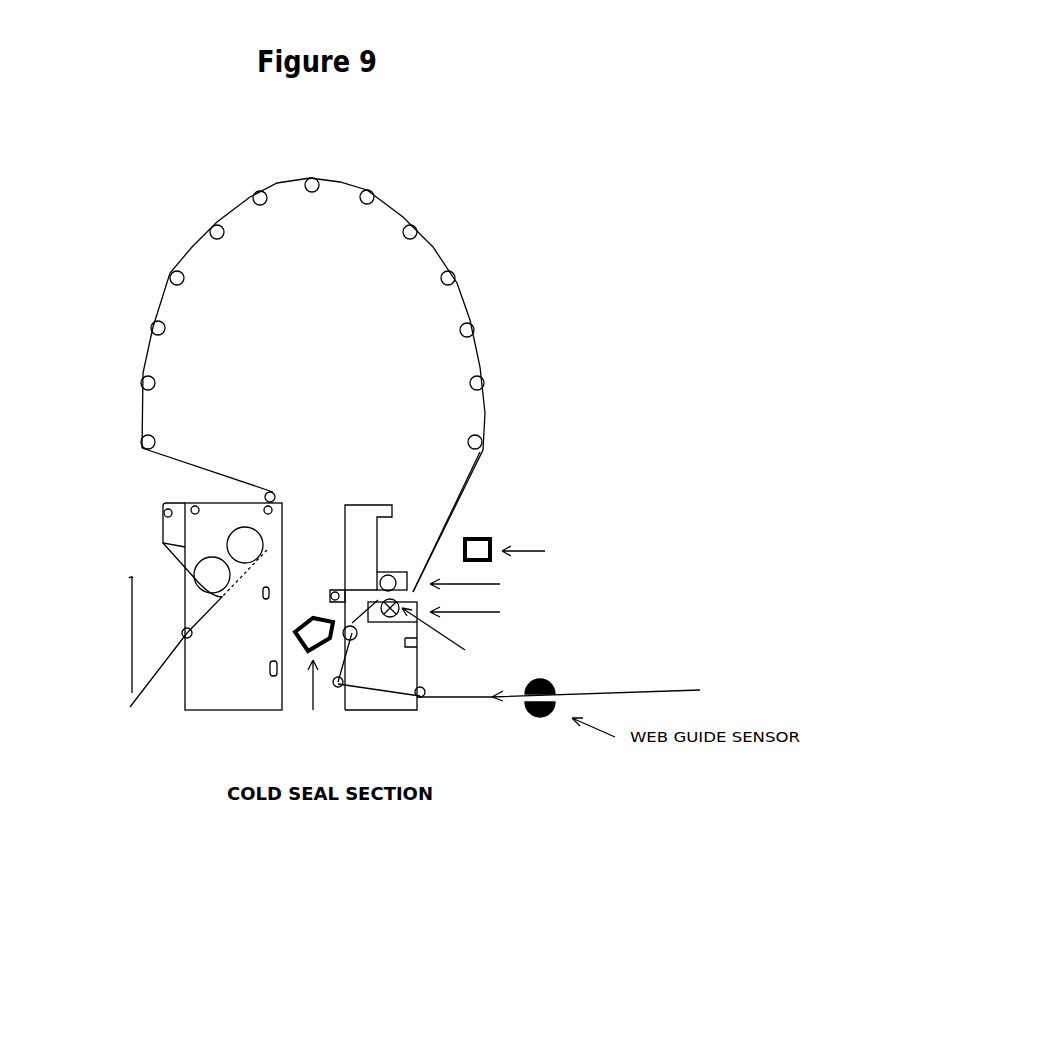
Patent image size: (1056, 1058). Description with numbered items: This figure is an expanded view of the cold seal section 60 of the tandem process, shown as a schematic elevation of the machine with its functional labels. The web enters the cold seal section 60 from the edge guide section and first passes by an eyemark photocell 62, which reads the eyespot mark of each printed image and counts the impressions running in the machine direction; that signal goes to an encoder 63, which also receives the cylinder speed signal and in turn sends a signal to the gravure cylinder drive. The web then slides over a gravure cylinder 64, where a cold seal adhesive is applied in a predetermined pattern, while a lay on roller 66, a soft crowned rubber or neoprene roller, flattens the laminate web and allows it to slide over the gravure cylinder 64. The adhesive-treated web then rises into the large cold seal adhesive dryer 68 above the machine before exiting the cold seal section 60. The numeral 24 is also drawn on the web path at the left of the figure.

The cold seal section 60 is at (572, 343).
The cold seal adhesive dryer 68 is at (313, 385).
The encoder 63 is at (745, 541).
The lay on roller 66 is at (529, 584).
The gravure cylinder 64 is at (541, 628).
The eyemark photocell 62 is at (312, 687).
The web 24 is at (152, 668).